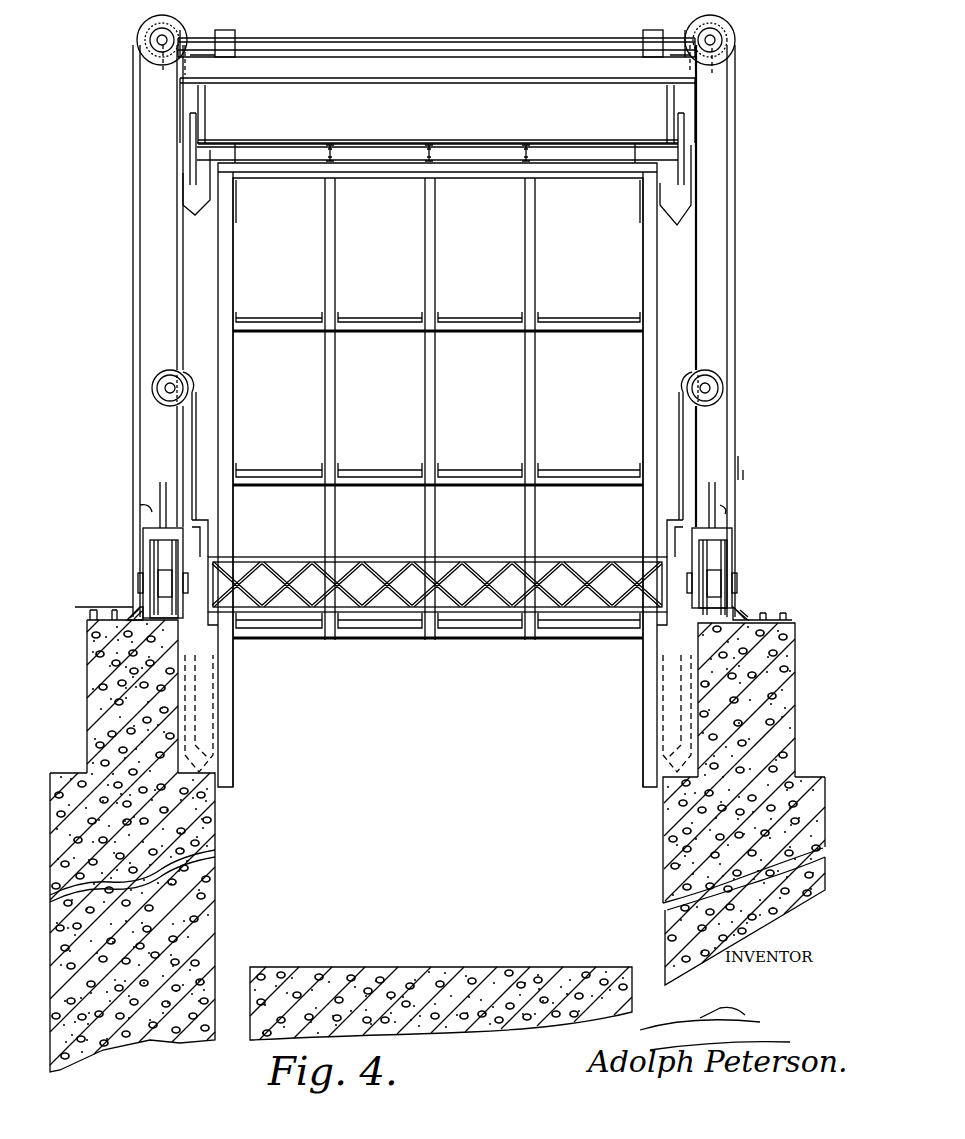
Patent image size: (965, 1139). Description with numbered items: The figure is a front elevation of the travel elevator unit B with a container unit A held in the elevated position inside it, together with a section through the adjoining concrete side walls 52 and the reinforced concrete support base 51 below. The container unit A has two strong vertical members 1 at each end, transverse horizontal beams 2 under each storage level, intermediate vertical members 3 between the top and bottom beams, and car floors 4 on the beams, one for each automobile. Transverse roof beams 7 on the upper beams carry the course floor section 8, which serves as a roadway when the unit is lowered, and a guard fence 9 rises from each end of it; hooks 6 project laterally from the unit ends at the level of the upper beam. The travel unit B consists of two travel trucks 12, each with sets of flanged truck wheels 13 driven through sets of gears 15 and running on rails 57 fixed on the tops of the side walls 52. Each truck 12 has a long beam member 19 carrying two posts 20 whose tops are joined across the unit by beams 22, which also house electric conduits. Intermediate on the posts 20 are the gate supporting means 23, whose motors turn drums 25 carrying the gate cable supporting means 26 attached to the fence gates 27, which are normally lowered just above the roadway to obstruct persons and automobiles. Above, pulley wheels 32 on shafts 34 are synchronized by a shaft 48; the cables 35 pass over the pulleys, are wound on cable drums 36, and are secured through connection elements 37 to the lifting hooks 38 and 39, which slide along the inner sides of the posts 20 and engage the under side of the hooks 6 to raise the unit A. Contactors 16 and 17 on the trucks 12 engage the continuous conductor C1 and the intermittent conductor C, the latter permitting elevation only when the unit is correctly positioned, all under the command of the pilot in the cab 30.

The vertical members 1 is at (234, 386).
The transverse horizontal beams 2 is at (381, 178).
The intermediate vertical members 3 is at (363, 487).
The car floors 4 is at (362, 318).
The hooks 6 is at (235, 152).
The transverse roof beams 7 is at (334, 152).
The course floor section 8 is at (494, 140).
The guard fence 9 is at (205, 97).
The travel trucks 12 is at (143, 535).
The truck wheels 13 is at (183, 622).
The sets of gears 15 is at (158, 573).
The contactor 16 is at (745, 607).
The contactor 17 is at (125, 605).
The long beam member 19 is at (164, 527).
The posts 20 is at (165, 278).
The beams 22 is at (315, 85).
The gate supporting means 23 is at (165, 390).
The drums 25 is at (162, 378).
The gate cable supporting means 26 is at (196, 433).
The fence gates 27 is at (283, 555).
The pilot's cab 30 is at (743, 478).
The pulley wheels 32 is at (137, 35).
The shafts 34 is at (160, 45).
The cables 35 is at (133, 135).
The cable drums 36 is at (150, 507).
The cable connection element 37 is at (196, 125).
The lifting hook 38 is at (678, 218).
The lifting hook 39 is at (196, 212).
The shaft 48 is at (345, 42).
The support bases 51 is at (460, 967).
The concrete side walls 52 is at (215, 840).
The rails 57 is at (87, 622).
The container unit A is at (218, 287).
The travel unit B is at (183, 325).
The intermittent conductor C is at (89, 608).
The continuous conductor C1 is at (775, 615).